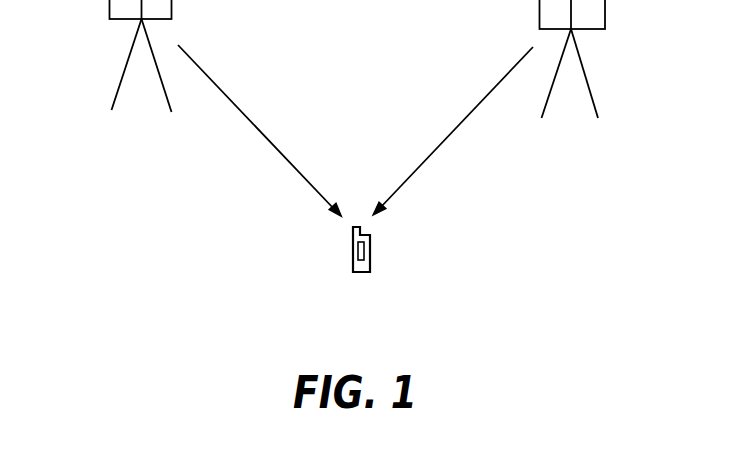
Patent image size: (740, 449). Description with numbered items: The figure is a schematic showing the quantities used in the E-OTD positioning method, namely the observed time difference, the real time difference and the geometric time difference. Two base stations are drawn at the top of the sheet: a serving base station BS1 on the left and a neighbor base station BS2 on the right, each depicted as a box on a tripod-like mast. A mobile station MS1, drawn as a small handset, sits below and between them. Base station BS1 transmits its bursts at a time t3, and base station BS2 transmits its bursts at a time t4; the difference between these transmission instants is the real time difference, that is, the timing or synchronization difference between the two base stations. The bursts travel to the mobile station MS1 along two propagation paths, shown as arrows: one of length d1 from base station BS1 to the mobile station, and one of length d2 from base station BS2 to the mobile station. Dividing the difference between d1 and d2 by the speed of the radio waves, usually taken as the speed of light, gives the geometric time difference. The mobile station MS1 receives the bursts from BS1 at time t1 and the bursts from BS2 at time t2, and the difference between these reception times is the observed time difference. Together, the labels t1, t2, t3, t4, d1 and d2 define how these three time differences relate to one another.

The base station BS1 is at (108, 56).
The neighbor base station BS2 is at (607, 59).
The mobile station MS1 is at (354, 270).
The reception time of bursts from BS1 t1 is at (315, 240).
The reception time of bursts from BS2 t2 is at (405, 240).
The transmission time of BS1 t3 is at (193, 10).
The transmission time of BS2 t4 is at (512, 20).
The propagation path length from BS1 to MS1 d1 is at (260, 131).
The propagation path length from BS2 to MS1 d2 is at (453, 131).